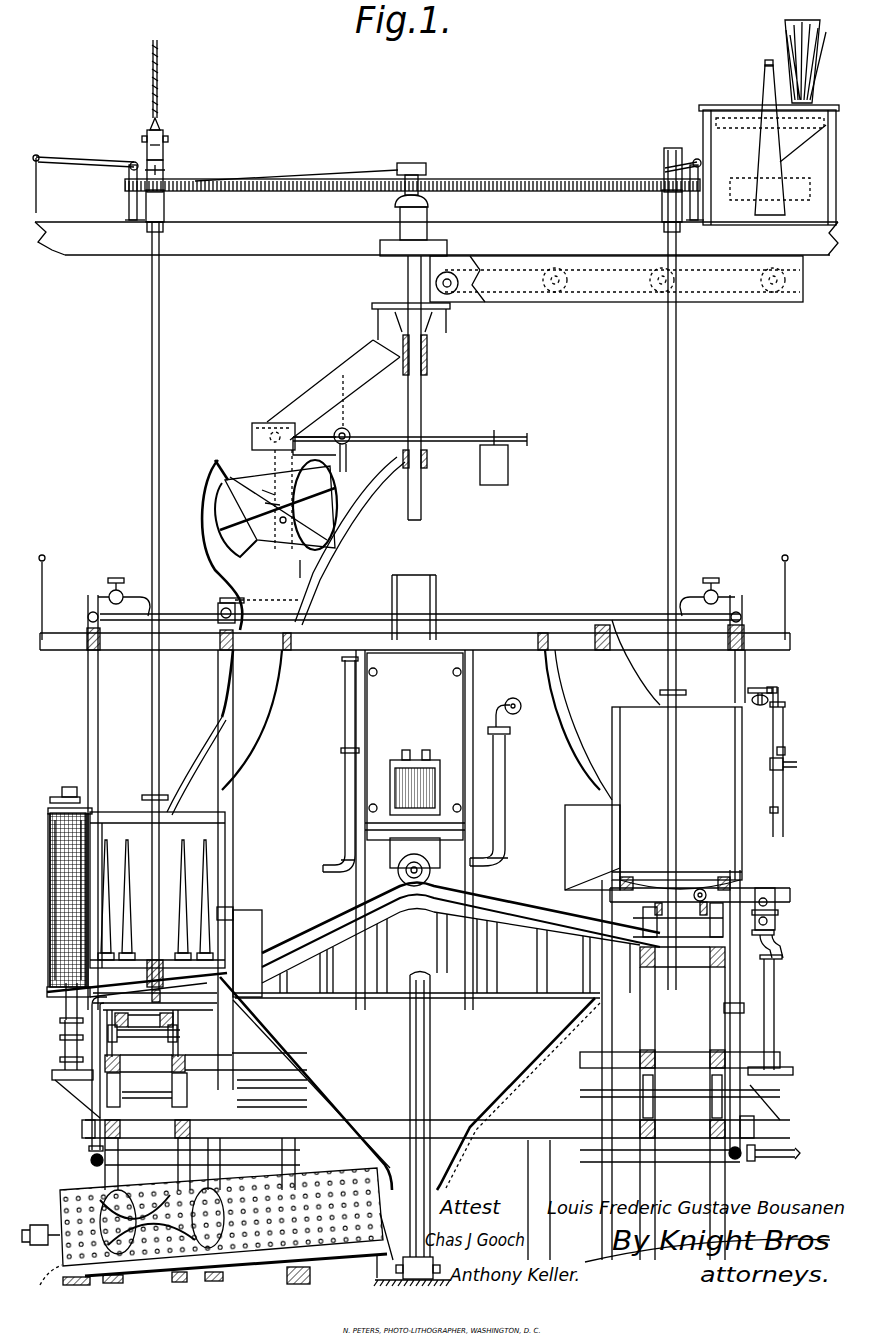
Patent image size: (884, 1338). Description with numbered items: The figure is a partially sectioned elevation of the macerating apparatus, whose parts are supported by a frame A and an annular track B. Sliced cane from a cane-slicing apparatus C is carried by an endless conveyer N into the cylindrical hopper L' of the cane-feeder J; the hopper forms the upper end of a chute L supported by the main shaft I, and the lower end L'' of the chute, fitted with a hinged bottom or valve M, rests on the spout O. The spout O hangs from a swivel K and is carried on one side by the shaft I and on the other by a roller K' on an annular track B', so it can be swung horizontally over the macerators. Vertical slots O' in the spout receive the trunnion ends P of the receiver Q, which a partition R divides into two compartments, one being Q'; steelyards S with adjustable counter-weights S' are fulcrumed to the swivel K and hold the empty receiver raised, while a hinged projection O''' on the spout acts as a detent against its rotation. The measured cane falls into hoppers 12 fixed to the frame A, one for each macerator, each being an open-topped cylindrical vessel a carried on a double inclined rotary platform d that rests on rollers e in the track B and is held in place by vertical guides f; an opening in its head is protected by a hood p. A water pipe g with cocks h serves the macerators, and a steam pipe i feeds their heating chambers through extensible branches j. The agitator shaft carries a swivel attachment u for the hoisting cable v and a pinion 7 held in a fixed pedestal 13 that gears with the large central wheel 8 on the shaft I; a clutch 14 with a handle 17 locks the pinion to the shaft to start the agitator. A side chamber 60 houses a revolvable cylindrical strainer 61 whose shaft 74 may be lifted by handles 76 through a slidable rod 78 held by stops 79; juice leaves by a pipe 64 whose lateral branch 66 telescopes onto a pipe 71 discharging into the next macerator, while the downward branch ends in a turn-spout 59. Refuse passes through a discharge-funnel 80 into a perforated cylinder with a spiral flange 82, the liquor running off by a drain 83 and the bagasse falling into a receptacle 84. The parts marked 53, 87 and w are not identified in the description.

The pinion 7 is at (423, 169).
The large central wheel 8 is at (412, 170).
The hopper 12 is at (417, 725).
The fixed pedestal 13 is at (414, 197).
The clutch 14 is at (423, 166).
The handle 17 is at (83, 177).
The box 53 is at (592, 847).
The turn-spout 59 is at (67, 1081).
The side chamber 60 is at (57, 905).
The revolvable cylindrical strainer 61 is at (68, 900).
The pipe 64 is at (420, 1004).
The lateral branch 66 is at (345, 820).
The second pipe 71 is at (344, 718).
The strainer shaft 74 is at (411, 736).
The handle 76 is at (794, 767).
The slidable and rotatable rod 78 is at (50, 802).
The stop 79 is at (787, 769).
The discharge-funnel 80 is at (410, 1083).
The spiral rib 82 is at (207, 1223).
The drain 83 is at (186, 1274).
The receptacle 84 is at (40, 1275).
The screw conveyor 87 is at (183, 1221).
The cable v is at (163, 79).
The swivel attachment u is at (159, 139).
The frame A is at (436, 680).
The steelyard S is at (410, 576).
The cane-slicing apparatus C is at (769, 122).
The endless band N is at (616, 279).
The shaft I is at (420, 388).
The cylindrical hopper L' is at (411, 321).
The chute L is at (333, 390).
The lower end of chute L'' is at (273, 428).
The hanger K is at (391, 413).
The valve M is at (316, 450).
The counter-weight S' is at (410, 450).
The receiver Q is at (276, 503).
The compartment Q' is at (261, 486).
The partition R is at (265, 502).
The trunnion end P is at (285, 522).
The vertical slot O' is at (214, 545).
The projection O''' is at (207, 470).
The cane-feeder J is at (350, 541).
The spout O is at (267, 580).
The cock h is at (416, 587).
The water pipe g is at (413, 629).
The roller K' is at (221, 607).
The annular track B' is at (404, 635).
The hood p is at (413, 695).
The vertical guide f is at (280, 870).
The macerator vessel a is at (416, 810).
The rod w is at (155, 900).
The rotary platform d is at (447, 1068).
The wheel e is at (443, 1072).
The annular track B is at (437, 1190).
The steam pipe i is at (441, 1082).
The extensible branch j is at (743, 1010).